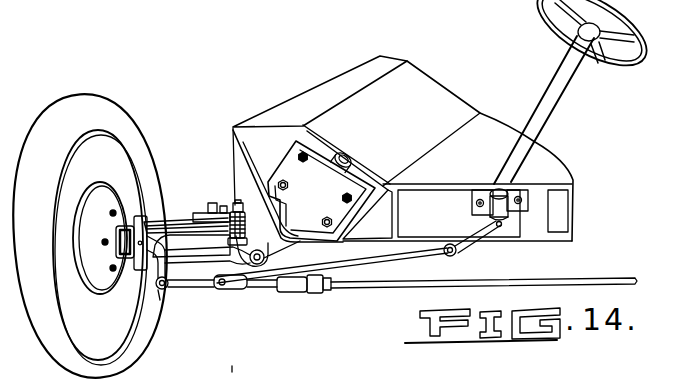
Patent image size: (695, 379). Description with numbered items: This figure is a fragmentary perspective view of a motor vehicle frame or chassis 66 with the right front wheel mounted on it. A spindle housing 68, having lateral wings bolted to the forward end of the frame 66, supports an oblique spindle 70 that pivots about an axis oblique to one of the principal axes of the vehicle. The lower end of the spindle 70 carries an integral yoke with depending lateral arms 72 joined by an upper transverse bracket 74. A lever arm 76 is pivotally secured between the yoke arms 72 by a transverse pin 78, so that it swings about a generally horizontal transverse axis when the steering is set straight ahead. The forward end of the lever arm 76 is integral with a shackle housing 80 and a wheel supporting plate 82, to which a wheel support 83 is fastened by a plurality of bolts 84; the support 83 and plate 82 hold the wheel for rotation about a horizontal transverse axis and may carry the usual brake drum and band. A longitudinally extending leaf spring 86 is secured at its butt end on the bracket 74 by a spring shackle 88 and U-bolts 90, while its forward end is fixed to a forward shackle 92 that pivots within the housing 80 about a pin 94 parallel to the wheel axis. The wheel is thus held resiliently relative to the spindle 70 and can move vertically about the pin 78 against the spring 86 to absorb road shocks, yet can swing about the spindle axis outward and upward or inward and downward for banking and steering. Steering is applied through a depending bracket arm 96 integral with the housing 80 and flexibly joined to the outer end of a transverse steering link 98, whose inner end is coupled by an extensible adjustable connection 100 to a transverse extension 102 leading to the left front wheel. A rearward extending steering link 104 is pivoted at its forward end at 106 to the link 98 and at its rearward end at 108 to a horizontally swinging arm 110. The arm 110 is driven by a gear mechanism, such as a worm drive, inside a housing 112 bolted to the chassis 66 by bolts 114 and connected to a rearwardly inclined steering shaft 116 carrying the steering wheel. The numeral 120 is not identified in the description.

The motor vehicle frame 66 is at (317, 87).
The spindle housing 68 is at (321, 191).
The oblique spindle 70 is at (306, 250).
The lateral arms 72 is at (182, 288).
The upper transverse bracket 74 is at (242, 236).
The lever arm 76 is at (162, 290).
The transverse pin 78 is at (267, 261).
The shackle housing 80 is at (156, 206).
The wheel supporting plate 82 is at (97, 237).
The wheel support 83 is at (107, 290).
The bolts 84 is at (95, 265).
The leaf spring 86 is at (182, 214).
The spring shackle 88 is at (227, 202).
The U-bolts 90 is at (238, 200).
The forward shackle 92 is at (111, 212).
The pin 94 is at (160, 244).
The depending bracket arm 96 is at (162, 300).
The transverse steering link 98 is at (208, 268).
The extensible adjustable connection 100 is at (292, 296).
The transverse extension 102 is at (416, 290).
The steering link 104 is at (369, 262).
The forward pivotal connection 106 is at (218, 291).
The rearward pivotal connection 108 is at (457, 259).
The horizontally swinging arm 110 is at (480, 250).
The gear housing 112 is at (512, 216).
The bolts 114 is at (518, 188).
The steering shaft 116 is at (549, 114).
The link 120 is at (242, 372).